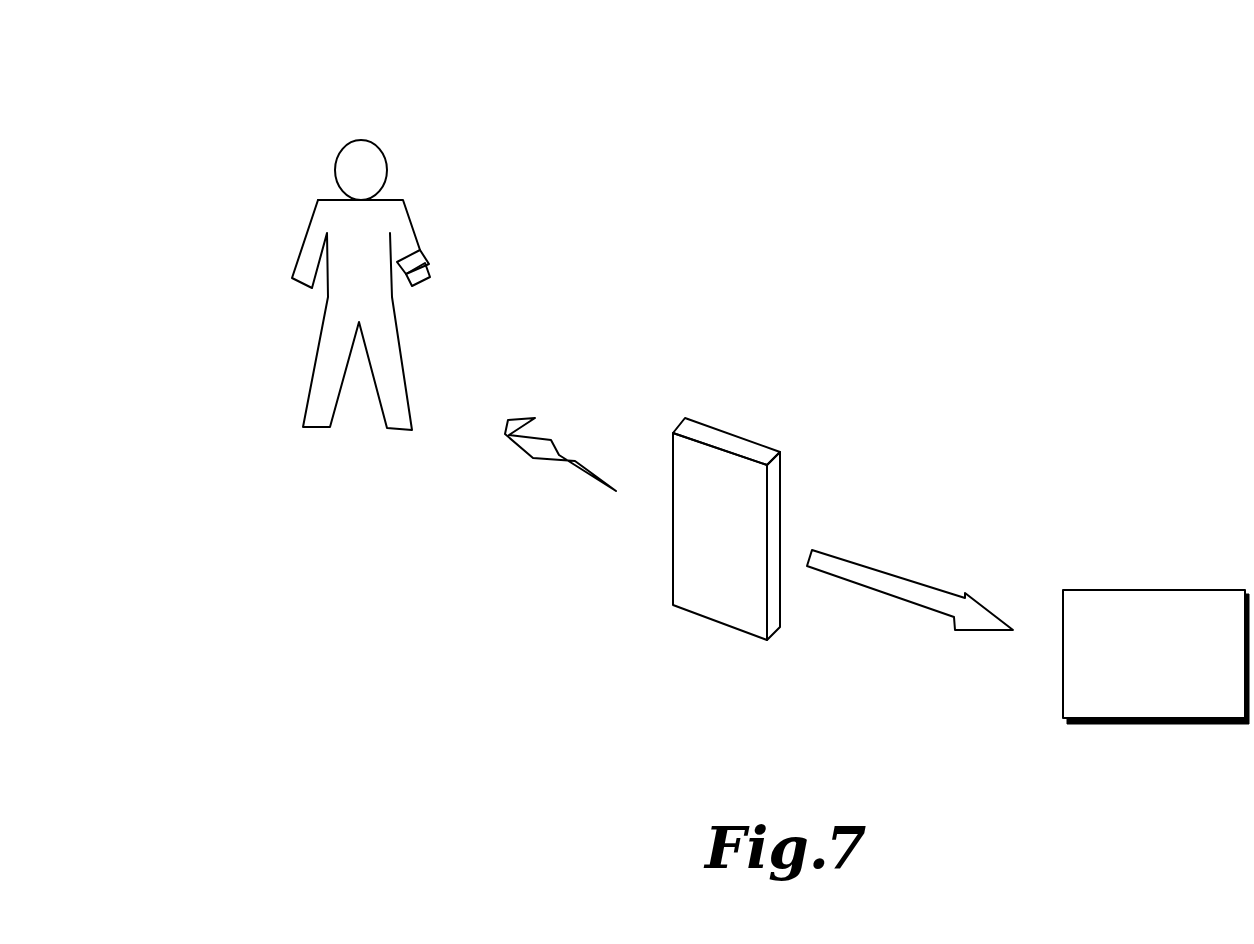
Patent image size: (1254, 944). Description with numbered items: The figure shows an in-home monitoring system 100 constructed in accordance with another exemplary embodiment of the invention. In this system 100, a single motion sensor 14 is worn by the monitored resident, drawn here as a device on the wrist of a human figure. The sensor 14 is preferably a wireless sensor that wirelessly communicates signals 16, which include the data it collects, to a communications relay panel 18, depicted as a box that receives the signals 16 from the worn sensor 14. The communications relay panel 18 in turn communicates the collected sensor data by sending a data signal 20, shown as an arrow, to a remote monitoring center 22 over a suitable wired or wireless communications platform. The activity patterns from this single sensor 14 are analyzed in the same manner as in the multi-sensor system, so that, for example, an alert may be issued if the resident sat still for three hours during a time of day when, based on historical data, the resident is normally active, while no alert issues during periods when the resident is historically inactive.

The in-home monitoring system 100 is at (302, 104).
The motion sensor 14 is at (430, 260).
The signals 16 is at (552, 440).
The communications relay panel 18 is at (733, 543).
The data signal 20 is at (902, 580).
The remote monitoring center 22 is at (1176, 674).